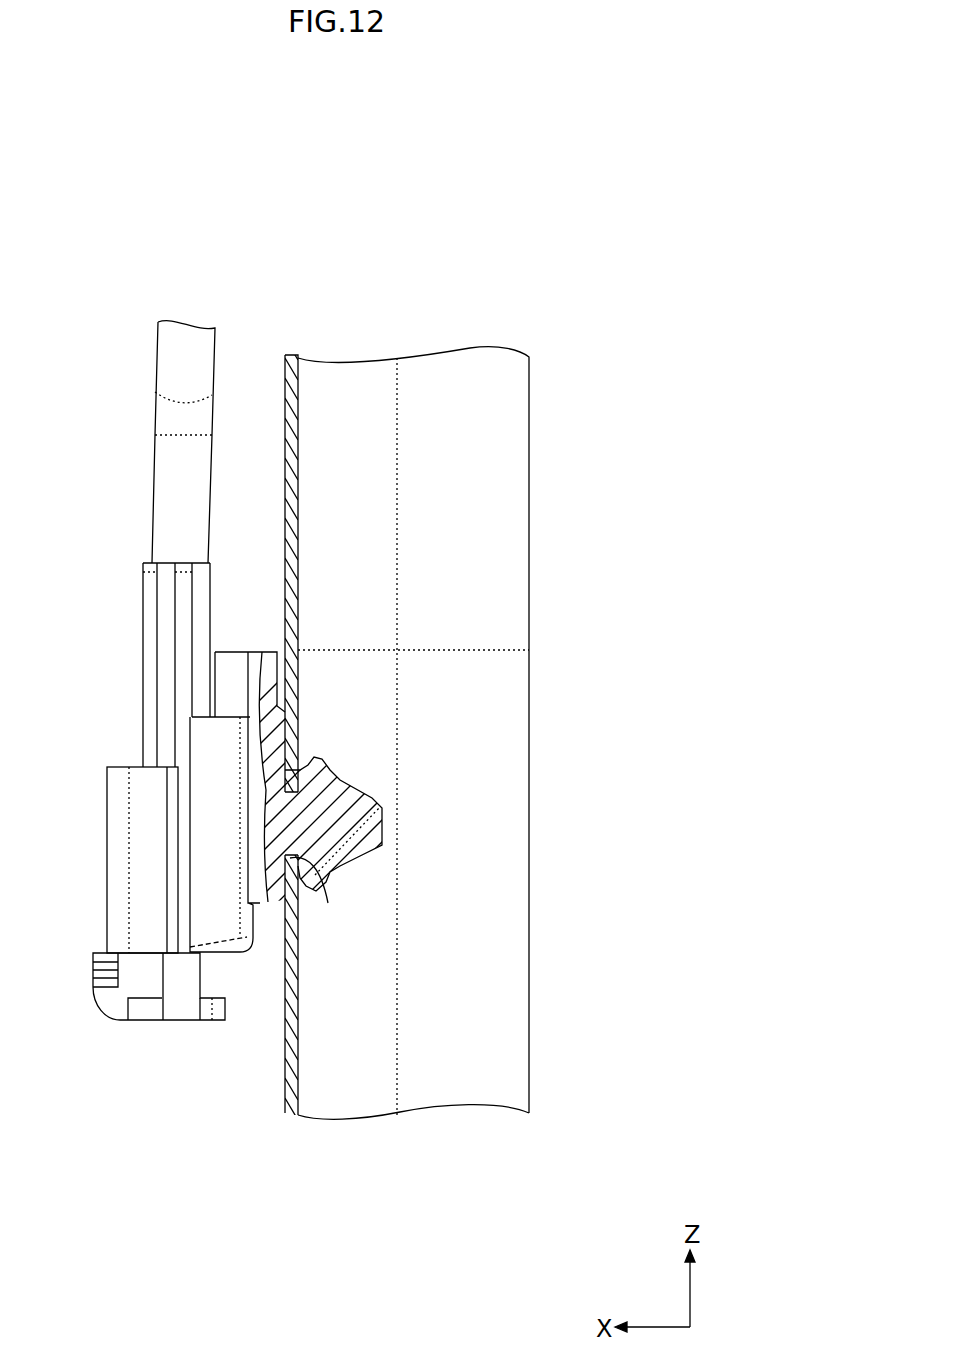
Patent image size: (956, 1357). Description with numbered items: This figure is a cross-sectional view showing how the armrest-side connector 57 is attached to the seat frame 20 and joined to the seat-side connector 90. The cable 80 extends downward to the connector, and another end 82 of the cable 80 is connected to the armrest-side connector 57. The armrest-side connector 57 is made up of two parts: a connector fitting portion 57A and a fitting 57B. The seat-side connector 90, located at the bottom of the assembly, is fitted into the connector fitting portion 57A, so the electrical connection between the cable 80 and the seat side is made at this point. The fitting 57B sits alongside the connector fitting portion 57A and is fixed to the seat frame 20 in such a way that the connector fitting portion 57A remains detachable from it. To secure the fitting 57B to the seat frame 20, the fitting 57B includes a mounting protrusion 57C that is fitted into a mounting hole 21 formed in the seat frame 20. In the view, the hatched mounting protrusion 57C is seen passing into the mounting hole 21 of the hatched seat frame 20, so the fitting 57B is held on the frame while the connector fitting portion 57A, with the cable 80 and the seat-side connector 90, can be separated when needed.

The seat frame 20 is at (280, 352).
The mounting hole 21 is at (316, 882).
The armrest-side connector 57 is at (97, 748).
The connector fitting portion 57A is at (147, 836).
The fitting 57B is at (262, 655).
The mounting protrusion 57C is at (385, 812).
The cable 80 is at (130, 432).
The another end of the cable 82 is at (175, 520).
The seat-side connector 90 is at (156, 1040).